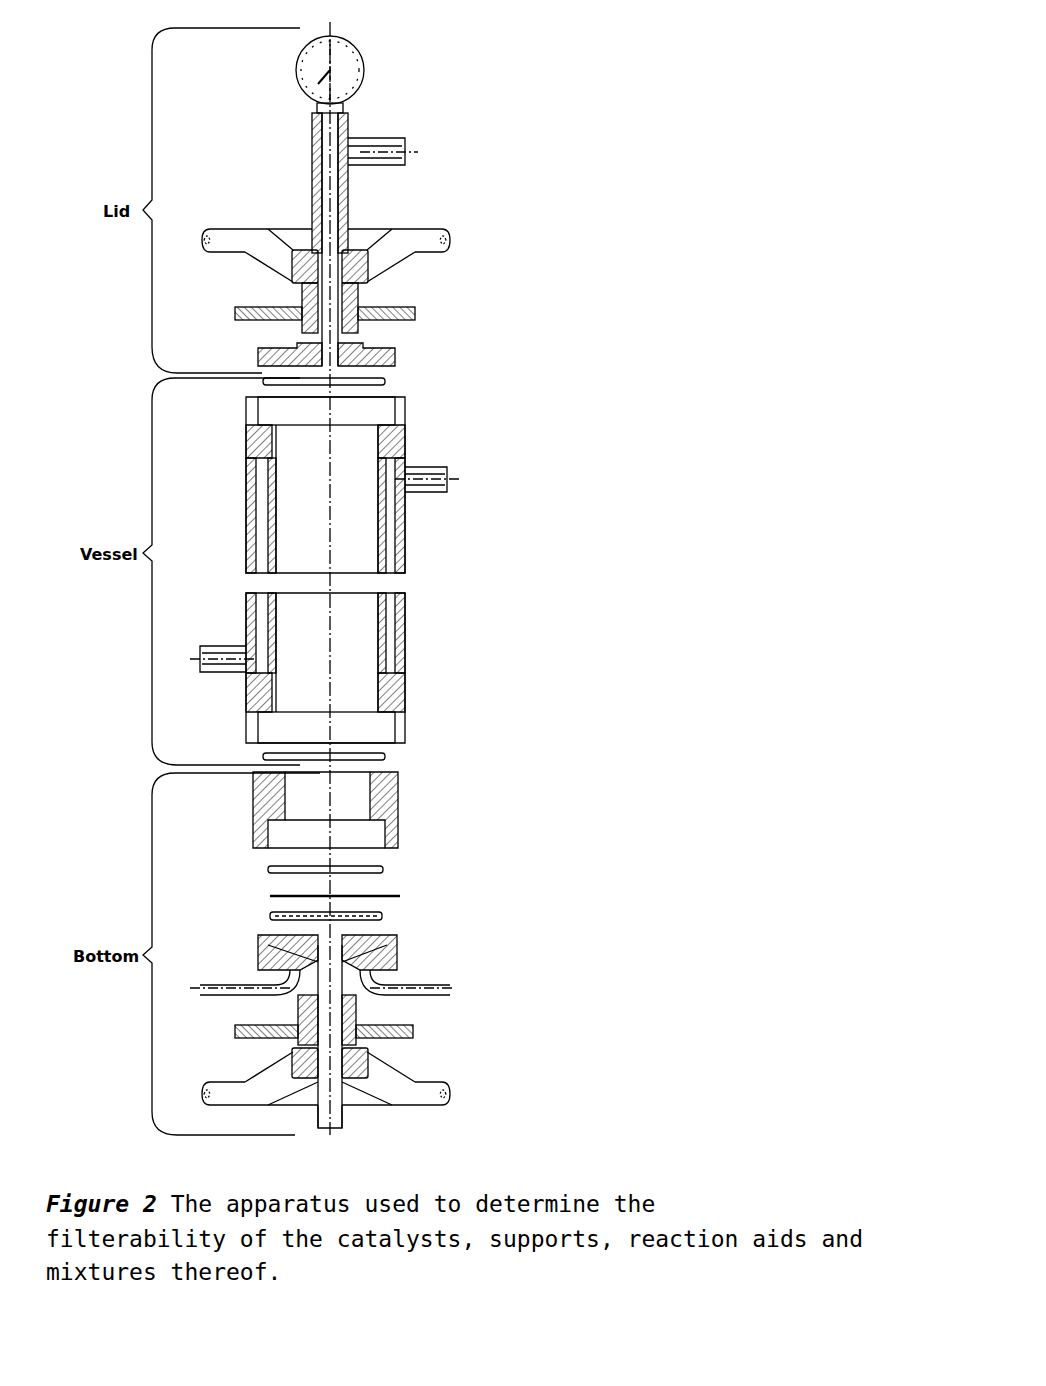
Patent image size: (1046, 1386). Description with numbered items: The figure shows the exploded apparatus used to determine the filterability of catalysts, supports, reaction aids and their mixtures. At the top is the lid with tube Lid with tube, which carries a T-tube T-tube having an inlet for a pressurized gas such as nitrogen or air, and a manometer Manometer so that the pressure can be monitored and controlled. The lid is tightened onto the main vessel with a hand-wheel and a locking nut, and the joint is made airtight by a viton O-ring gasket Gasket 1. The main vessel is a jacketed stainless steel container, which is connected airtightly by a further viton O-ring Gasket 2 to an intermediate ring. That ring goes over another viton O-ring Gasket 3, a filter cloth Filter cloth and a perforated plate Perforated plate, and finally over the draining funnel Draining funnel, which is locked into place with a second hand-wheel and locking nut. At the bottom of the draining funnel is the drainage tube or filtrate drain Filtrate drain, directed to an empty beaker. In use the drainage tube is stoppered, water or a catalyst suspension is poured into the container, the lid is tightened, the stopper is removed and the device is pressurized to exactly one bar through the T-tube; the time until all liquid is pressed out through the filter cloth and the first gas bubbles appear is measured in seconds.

The manometer Manometer is at (345, 68).
The element T-tube is at (500, 137).
The lid Lid with tube is at (395, 357).
The viton-o-ring gasket Gasket 1 is at (385, 381).
The viton-o-ring Gasket 2 is at (385, 757).
The viton-o-ring Gasket 3 is at (383, 869).
The filter cloth Filter cloth is at (400, 896).
The perforated plate Perforated plate is at (382, 916).
The draining funnel Draining funnel is at (380, 962).
The drainage tube Filtrate drain is at (342, 1119).